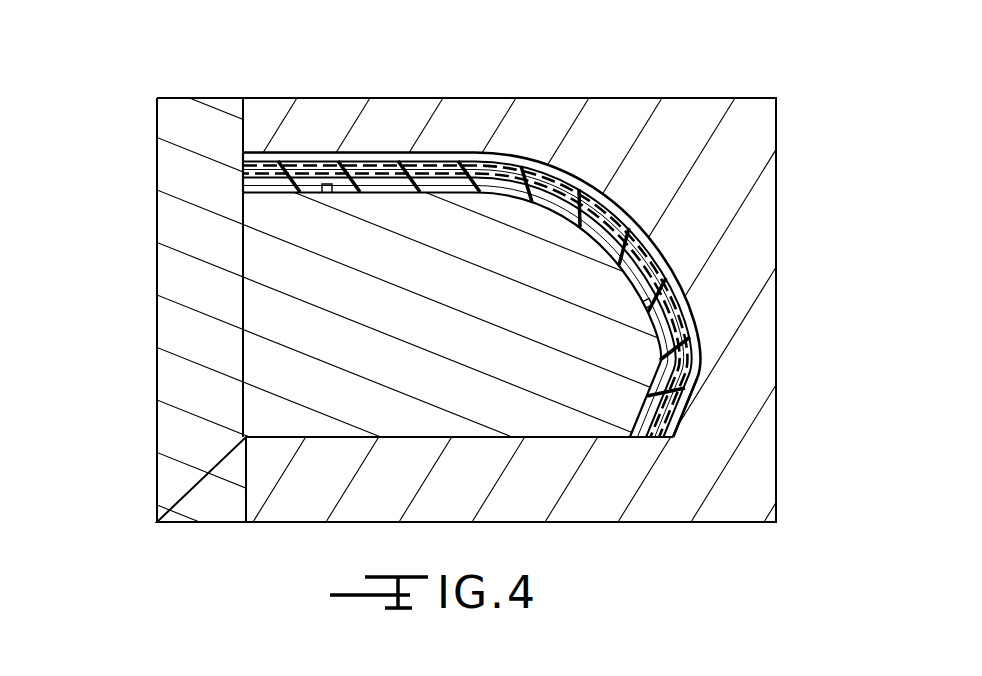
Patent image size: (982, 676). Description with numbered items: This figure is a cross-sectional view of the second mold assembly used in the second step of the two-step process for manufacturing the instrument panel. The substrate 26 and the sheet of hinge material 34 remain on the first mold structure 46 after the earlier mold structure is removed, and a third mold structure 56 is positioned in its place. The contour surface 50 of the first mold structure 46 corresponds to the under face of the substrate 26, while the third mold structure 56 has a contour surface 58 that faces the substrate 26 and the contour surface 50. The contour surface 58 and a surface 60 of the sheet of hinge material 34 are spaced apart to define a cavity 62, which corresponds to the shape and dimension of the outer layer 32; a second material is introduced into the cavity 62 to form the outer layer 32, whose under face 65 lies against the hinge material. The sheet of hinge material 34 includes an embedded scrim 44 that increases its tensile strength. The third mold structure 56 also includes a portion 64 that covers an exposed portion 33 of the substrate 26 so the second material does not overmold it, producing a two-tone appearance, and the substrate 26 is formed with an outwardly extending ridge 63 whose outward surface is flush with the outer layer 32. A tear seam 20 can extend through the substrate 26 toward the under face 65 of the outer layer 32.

The tear seam 20 is at (327, 194).
The substrate 26 is at (243, 191).
The outer layer 32 is at (265, 153).
The exposed portion 33 is at (695, 318).
The sheet of hinge material 34 is at (337, 153).
The scrim 44 is at (243, 163).
The first mold structure 46 is at (177, 342).
The contour surface 50 is at (560, 192).
The third mold structure 56 is at (403, 117).
The contour surface 58 is at (628, 243).
The surface 60 is at (633, 206).
The cavity 62 is at (510, 158).
The outwardly extending ridge 63 is at (683, 362).
The portion 64 is at (707, 345).
The under face 65 is at (443, 193).